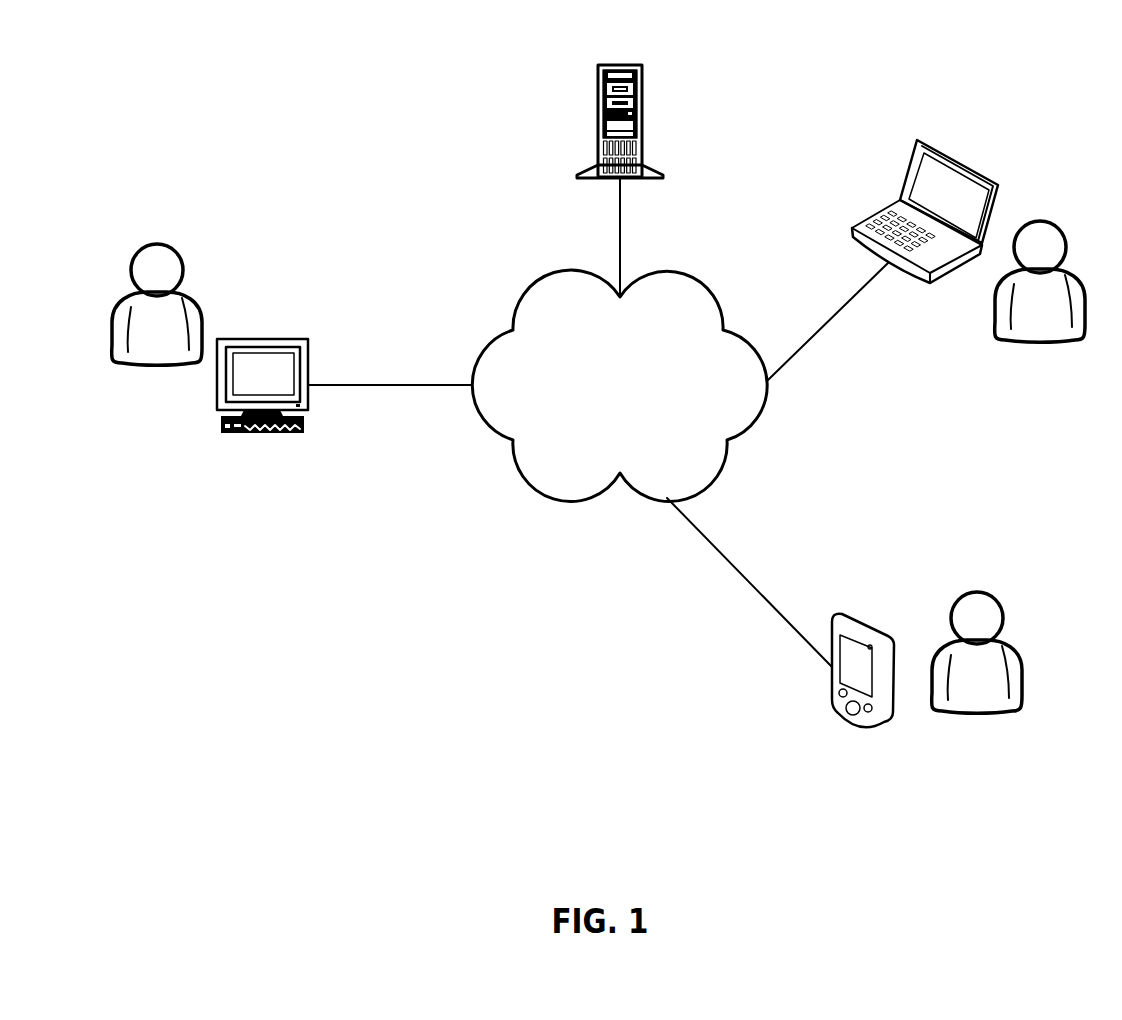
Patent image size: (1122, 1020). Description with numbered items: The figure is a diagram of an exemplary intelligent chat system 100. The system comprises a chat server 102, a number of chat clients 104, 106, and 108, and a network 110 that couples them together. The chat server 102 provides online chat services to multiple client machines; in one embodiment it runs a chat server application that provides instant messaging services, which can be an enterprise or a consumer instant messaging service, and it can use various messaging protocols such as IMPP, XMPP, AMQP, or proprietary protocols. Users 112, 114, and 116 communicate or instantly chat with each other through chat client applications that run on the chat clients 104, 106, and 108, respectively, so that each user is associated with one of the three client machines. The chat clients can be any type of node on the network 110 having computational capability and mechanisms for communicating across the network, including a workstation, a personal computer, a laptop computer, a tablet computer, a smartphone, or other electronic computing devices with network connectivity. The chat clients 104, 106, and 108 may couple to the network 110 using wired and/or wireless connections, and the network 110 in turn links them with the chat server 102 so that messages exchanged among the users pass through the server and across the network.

The intelligent chat system 100 is at (521, 601).
The chat server 102 is at (620, 63).
The chat client 104 is at (260, 339).
The chat client 106 is at (963, 160).
The chat client 108 is at (835, 708).
The network 110 is at (604, 408).
The user 112 is at (153, 245).
The user 114 is at (1035, 343).
The user 116 is at (1022, 653).